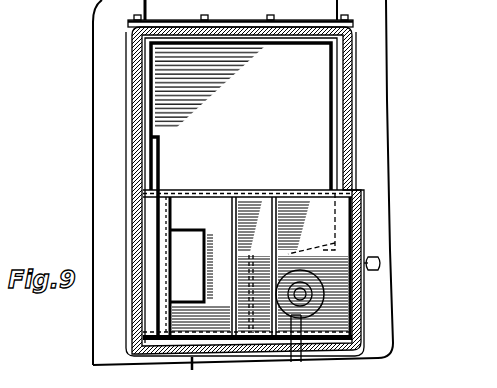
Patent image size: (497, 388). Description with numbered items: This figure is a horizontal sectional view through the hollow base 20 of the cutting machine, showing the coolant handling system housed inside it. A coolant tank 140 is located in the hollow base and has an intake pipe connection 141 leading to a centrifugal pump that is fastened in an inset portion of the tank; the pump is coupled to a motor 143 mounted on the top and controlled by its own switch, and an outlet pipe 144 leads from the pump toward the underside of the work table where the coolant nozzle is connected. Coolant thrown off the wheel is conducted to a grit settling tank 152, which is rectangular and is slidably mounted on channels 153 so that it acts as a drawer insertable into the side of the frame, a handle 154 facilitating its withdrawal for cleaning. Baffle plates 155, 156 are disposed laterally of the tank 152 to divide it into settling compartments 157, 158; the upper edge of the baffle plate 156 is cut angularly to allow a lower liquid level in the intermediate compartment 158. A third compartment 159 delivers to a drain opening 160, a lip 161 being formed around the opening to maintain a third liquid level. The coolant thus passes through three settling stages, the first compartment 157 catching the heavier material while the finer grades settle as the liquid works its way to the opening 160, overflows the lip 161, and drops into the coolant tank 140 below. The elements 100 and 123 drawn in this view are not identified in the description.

The base 20 is at (353, 120).
The outer casing 100 is at (240, 362).
The support leg 123 is at (192, 370).
The coolant tank 140 is at (322, 143).
The intake pipe connection 141 is at (335, 243).
The motor 143 is at (357, 292).
The outlet pipe 144 is at (300, 350).
The grit settling tank 152 is at (346, 224).
The channels 153 is at (161, 192).
The handle 154 is at (378, 263).
The baffle plate 155 is at (281, 203).
The baffle plate 156 is at (237, 203).
The settling compartment 157 is at (312, 205).
The intermediate compartment 158 is at (258, 202).
The third compartment 159 is at (207, 203).
The drain opening 160 is at (182, 238).
The lip 161 is at (208, 231).